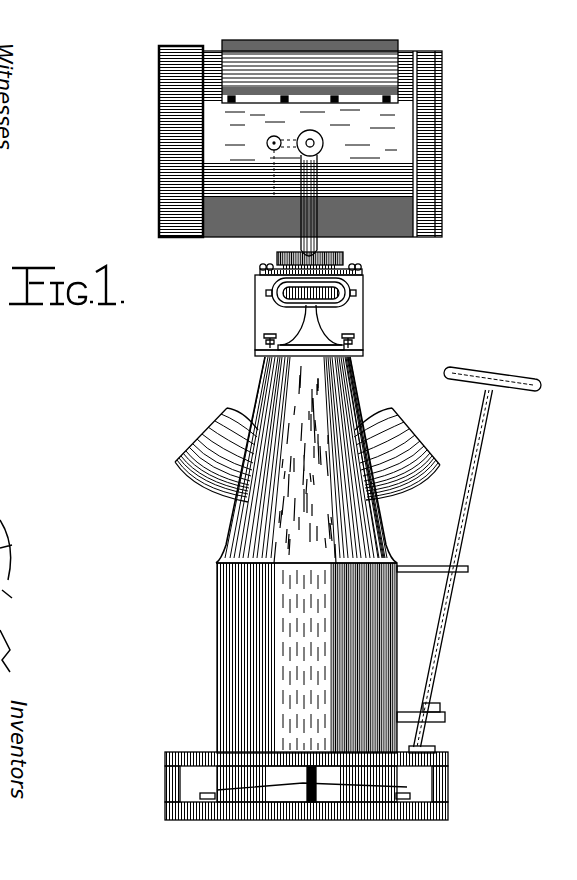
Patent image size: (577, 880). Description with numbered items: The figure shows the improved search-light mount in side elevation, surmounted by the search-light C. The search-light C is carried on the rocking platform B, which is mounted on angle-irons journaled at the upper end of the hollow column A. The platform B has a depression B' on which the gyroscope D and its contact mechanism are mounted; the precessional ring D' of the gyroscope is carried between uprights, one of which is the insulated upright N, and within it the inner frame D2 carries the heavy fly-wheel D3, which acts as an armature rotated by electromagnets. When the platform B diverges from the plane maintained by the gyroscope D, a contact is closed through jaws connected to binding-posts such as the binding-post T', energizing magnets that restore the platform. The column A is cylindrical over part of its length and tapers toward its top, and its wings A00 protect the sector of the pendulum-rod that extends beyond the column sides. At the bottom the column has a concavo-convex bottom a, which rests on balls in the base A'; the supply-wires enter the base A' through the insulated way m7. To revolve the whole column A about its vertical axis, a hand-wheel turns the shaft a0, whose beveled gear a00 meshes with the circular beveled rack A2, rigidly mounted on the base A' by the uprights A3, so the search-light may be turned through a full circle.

The search-light C is at (398, 142).
The rocking platform B is at (286, 312).
The depression B' is at (328, 364).
The gyroscope D is at (334, 286).
The precessional ring D' is at (274, 305).
The inner frame D2 is at (352, 296).
The fly-wheel D3 is at (283, 302).
The upright N is at (318, 326).
The binding-post T' is at (306, 346).
The hollow column A is at (282, 555).
The wings A00 is at (197, 470).
The concavo-convex bottom a is at (538, 387).
The shaft a0 is at (459, 619).
The beveled gear a00 is at (436, 749).
The circular beveled rack A2 is at (165, 757).
The uprights A3 is at (203, 797).
The base A' is at (330, 805).
The insulated way m7 is at (208, 800).